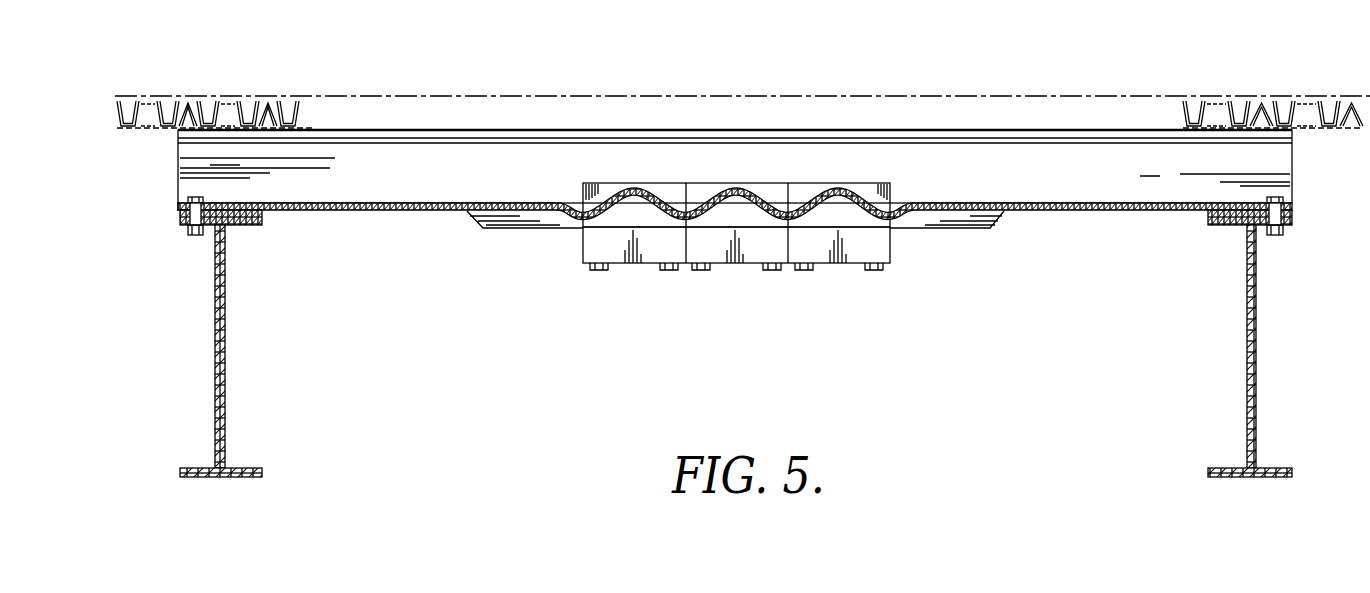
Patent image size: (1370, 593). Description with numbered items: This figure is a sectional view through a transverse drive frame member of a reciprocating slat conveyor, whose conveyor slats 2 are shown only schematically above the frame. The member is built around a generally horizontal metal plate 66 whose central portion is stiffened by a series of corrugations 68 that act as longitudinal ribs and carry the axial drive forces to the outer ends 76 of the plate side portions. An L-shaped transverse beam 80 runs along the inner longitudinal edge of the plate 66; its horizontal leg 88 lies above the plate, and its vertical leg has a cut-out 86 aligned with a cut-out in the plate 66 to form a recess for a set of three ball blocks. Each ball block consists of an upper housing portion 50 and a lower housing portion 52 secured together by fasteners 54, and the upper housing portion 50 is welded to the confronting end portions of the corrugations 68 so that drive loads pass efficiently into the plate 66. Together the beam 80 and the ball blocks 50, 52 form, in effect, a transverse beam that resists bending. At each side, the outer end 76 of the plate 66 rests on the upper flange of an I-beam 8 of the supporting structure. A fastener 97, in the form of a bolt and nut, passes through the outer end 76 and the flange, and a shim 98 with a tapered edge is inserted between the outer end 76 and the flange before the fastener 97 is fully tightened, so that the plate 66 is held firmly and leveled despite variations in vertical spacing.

The conveyor slats 2 is at (1215, 106).
The I-beams 8 is at (225, 350).
The upper housing portion 50 is at (892, 200).
The lower housing portion 52 is at (873, 243).
The fasteners 54 is at (874, 268).
The metal plate 66 is at (357, 212).
The corrugations 68 is at (741, 195).
The outer ends 76 is at (178, 205).
The transverse beam 80 is at (1120, 190).
The cut-out 86 is at (602, 197).
The horizontal leg 88 is at (969, 135).
The fastener 97 is at (191, 232).
The shim 98 is at (250, 225).